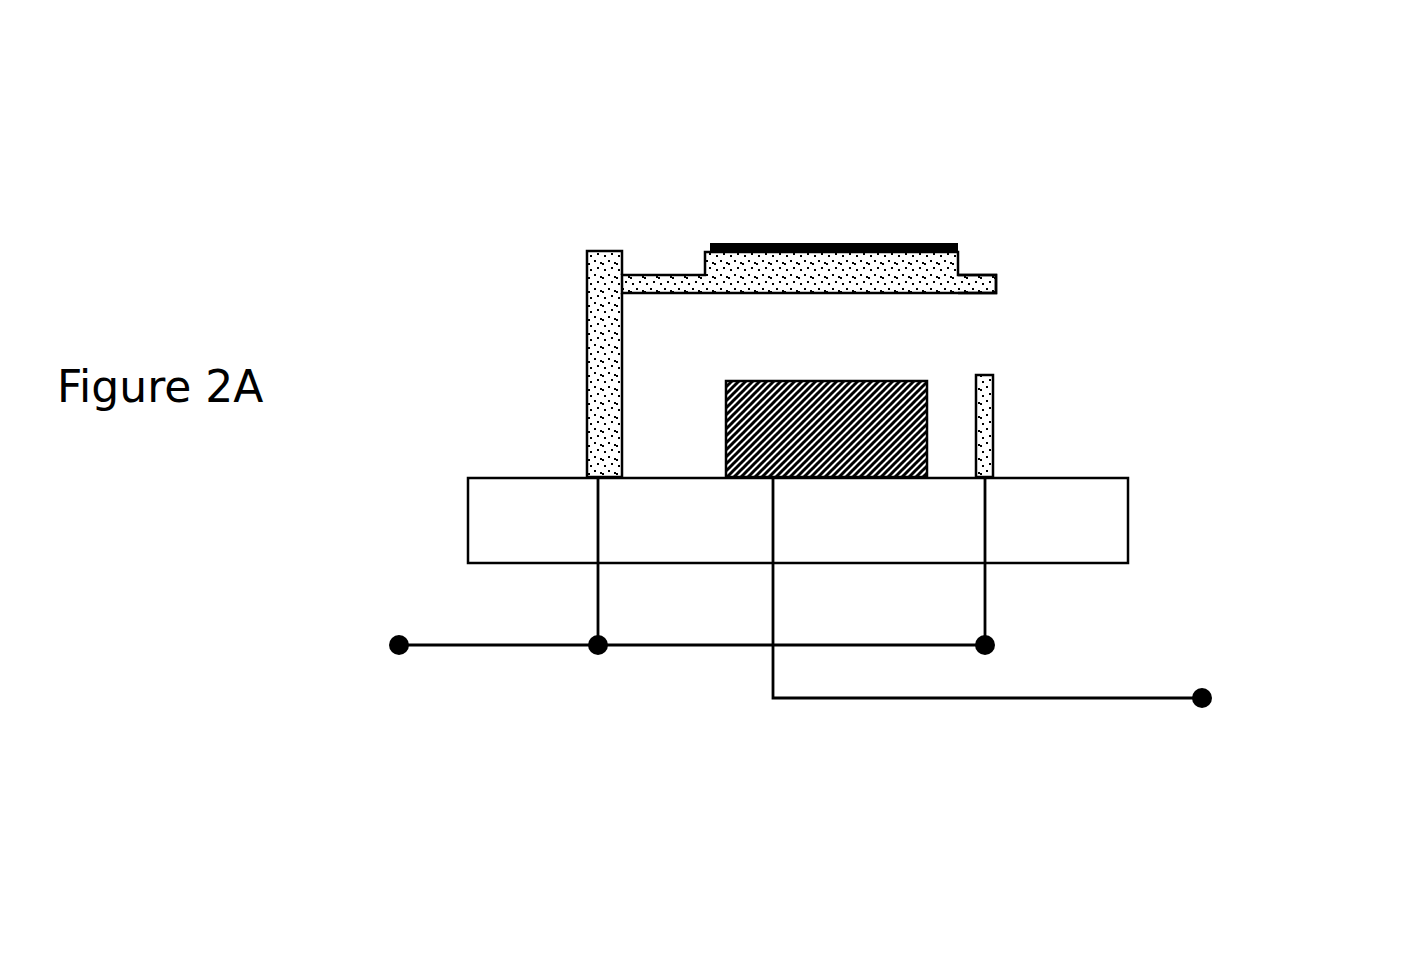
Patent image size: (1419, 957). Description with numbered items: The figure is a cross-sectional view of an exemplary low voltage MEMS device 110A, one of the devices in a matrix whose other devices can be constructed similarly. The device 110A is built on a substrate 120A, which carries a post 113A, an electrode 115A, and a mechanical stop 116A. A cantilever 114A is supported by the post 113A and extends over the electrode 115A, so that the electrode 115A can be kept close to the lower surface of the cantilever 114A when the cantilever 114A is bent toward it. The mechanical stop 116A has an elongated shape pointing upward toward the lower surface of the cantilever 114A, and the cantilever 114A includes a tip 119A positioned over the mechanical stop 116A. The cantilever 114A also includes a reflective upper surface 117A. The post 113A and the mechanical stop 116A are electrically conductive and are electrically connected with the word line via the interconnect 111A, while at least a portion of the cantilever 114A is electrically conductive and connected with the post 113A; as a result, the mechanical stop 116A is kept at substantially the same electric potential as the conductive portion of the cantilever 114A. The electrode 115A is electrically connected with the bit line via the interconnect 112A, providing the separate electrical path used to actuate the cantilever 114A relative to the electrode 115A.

The low voltage MEMS device 110A is at (1217, 167).
The interconnect 111A is at (678, 601).
The interconnect 112A is at (1011, 626).
The post 113A is at (607, 395).
The cantilever 114A is at (958, 250).
The electrode 115A is at (815, 385).
The mechanical stop 116A is at (997, 412).
The reflective upper surface 117A is at (873, 243).
The tip 119A is at (975, 286).
The substrate 120A is at (1097, 522).